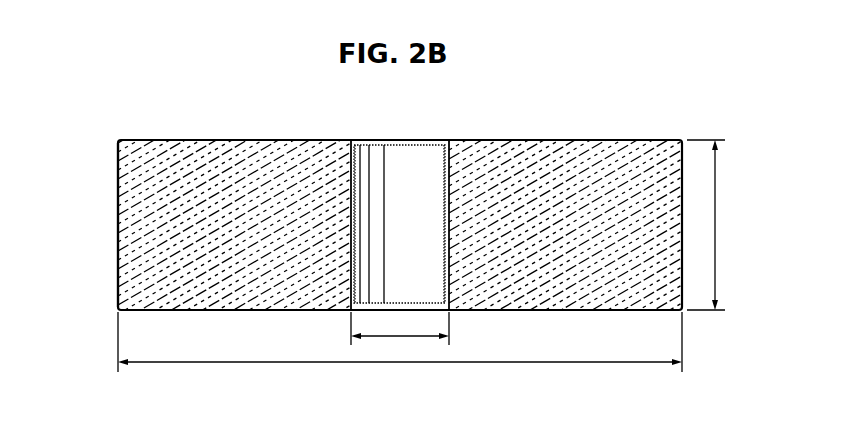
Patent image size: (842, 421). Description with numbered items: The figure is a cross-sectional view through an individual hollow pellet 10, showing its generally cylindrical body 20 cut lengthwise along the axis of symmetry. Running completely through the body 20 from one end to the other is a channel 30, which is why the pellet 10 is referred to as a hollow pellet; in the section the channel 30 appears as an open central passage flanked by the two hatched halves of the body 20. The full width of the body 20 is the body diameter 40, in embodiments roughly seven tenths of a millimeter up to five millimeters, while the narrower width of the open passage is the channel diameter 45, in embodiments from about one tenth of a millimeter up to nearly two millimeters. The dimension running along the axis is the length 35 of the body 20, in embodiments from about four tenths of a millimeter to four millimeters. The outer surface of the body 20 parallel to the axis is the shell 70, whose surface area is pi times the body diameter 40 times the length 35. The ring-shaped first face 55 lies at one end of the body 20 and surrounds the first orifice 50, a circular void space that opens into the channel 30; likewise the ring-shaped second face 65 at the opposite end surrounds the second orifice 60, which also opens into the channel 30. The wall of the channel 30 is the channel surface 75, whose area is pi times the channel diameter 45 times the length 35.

The pellet 10 is at (208, 108).
The body 20 is at (158, 172).
The channel 30 is at (377, 137).
The length 35 is at (717, 215).
The body diameter 40 is at (463, 362).
The channel diameter 45 is at (426, 339).
The first orifice 50 is at (448, 141).
The first face 55 is at (585, 140).
The second orifice 60 is at (386, 306).
The second face 65 is at (225, 312).
The shell 70 is at (118, 223).
The channel surface 75 is at (428, 178).